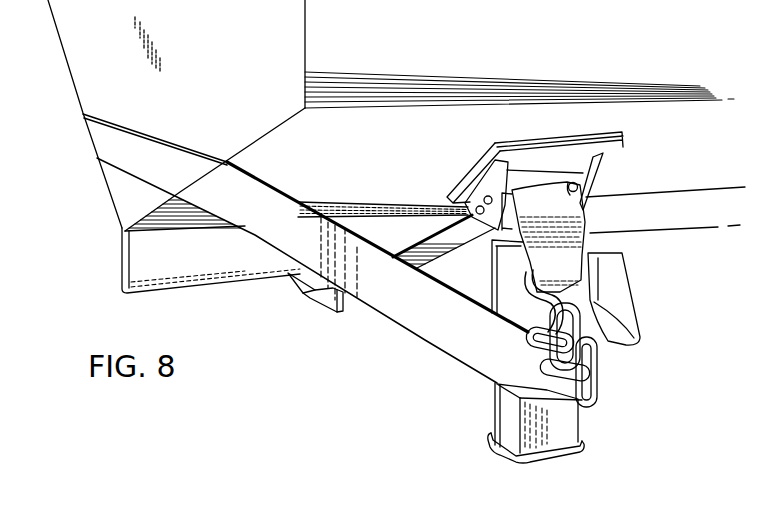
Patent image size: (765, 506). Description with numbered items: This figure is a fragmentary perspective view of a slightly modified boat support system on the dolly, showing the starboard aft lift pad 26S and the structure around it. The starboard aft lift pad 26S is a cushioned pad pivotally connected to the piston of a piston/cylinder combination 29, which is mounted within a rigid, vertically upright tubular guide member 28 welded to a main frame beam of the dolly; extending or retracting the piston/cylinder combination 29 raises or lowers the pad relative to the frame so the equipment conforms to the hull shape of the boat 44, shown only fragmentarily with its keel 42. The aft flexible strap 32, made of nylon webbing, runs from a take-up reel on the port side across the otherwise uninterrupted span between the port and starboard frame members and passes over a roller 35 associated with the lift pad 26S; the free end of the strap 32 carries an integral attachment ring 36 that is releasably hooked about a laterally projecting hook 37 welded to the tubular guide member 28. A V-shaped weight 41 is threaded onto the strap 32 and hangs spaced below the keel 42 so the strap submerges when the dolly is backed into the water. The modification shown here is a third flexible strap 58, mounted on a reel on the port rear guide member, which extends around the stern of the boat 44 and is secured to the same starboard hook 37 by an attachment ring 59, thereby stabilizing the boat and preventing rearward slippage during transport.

The starboard aft lift pad 26S is at (600, 131).
The tubular guide member 28 is at (490, 437).
The piston/cylinder combination 29 is at (497, 262).
The aft flexible strap 32 is at (438, 232).
The roller 35 is at (577, 192).
The attachment ring 36 is at (590, 297).
The hook 37 is at (578, 387).
The V-shaped weight 41 is at (305, 296).
The keel 42 is at (203, 280).
The boat 44 is at (580, 110).
The third flexible strap 58 is at (120, 159).
The attachment ring 59 is at (525, 390).